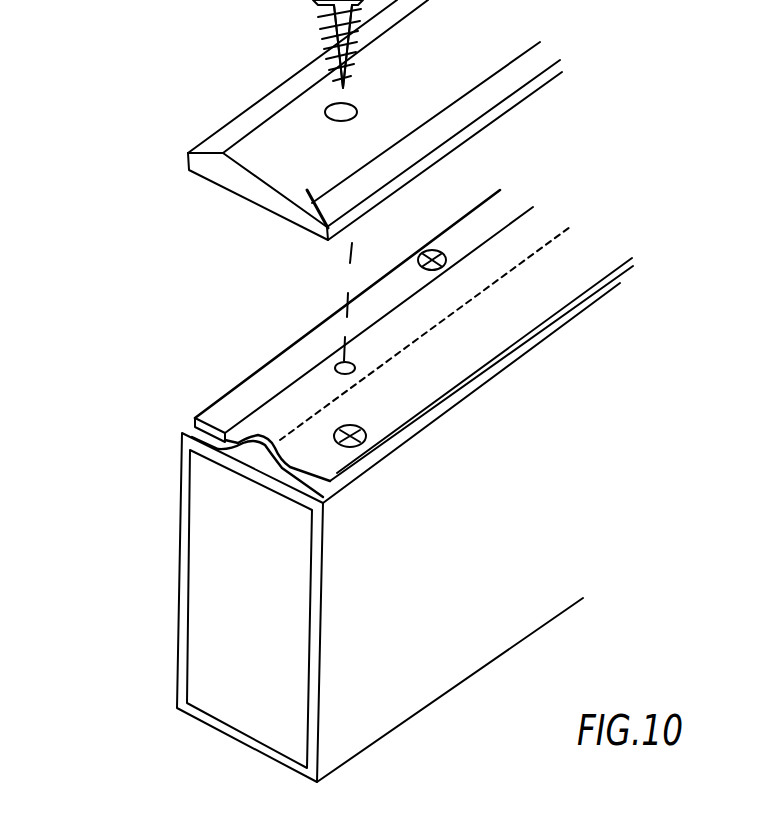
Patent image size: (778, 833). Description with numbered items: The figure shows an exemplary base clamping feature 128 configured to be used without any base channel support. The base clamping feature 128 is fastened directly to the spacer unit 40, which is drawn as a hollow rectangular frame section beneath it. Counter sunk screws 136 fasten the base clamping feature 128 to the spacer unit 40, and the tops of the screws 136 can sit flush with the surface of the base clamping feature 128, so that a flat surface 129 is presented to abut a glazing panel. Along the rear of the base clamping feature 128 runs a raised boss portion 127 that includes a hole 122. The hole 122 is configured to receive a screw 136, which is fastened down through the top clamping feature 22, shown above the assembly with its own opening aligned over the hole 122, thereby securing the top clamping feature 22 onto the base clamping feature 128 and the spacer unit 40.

The top clamping feature 22 is at (200, 163).
The counter sunk screws 136 is at (313, 14).
The hole 122 is at (340, 363).
The base clamping feature 128 is at (247, 384).
The raised boss portion 127 is at (266, 418).
The flat surface 129 is at (386, 409).
The spacer unit 40 is at (360, 690).